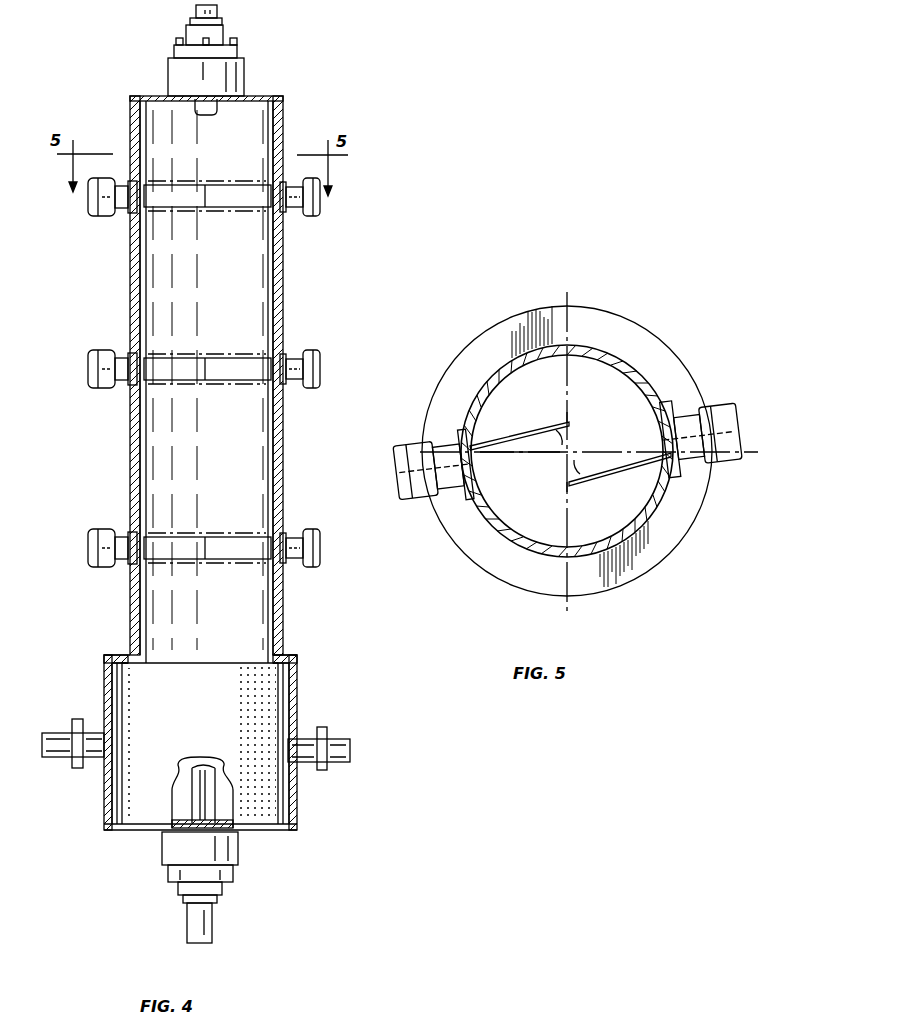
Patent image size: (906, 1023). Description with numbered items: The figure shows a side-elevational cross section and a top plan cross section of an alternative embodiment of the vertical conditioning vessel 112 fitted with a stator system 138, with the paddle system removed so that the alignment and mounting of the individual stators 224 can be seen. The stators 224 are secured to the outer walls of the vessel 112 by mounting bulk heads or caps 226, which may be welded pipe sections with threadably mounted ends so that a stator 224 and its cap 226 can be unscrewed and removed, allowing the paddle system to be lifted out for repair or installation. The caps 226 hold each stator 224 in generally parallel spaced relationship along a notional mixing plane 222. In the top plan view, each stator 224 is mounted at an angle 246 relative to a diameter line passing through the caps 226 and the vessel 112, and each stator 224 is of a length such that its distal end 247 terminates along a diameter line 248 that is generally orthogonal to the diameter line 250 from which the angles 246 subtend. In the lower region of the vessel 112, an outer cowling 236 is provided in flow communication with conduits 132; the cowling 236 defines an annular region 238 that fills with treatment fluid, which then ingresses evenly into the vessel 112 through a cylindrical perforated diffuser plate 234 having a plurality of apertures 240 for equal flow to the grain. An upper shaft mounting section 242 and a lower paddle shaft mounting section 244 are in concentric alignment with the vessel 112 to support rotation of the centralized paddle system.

In FIG. 4, the vessel 112 is at (281, 278).
In FIG. 5, the vessel 112 is at (653, 390).
In FIG. 4, the conduits 132 is at (308, 762).
In FIG. 4, the stator system 138 is at (111, 392).
In FIG. 5, the stator system 138 is at (394, 453).
In FIG. 4, the notional mixing plane 222 is at (213, 209).
In FIG. 4, the stators 224 is at (224, 185).
In FIG. 5, the stators 224 is at (527, 427).
In FIG. 4, the mounting bulk heads or caps 226 is at (320, 204).
In FIG. 5, the mounting bulk heads or caps 226 is at (728, 466).
In FIG. 4, the perforated diffuser plate 234 is at (140, 828).
In FIG. 4, the outer cowling 236 is at (297, 706).
In FIG. 5, the outer cowling 236 is at (483, 570).
In FIG. 4, the annular region 238 is at (286, 690).
In FIG. 4, the apertures 240 is at (130, 677).
In FIG. 4, the upper shaft mounting section 242 is at (245, 73).
In FIG. 4, the lower paddle shaft mounting section 244 is at (240, 849).
In FIG. 5, the angle 246 is at (578, 446).
In FIG. 5, the distal end 247 is at (568, 416).
In FIG. 5, the diameter line 248 is at (583, 503).
In FIG. 5, the diameter line 250 is at (525, 453).